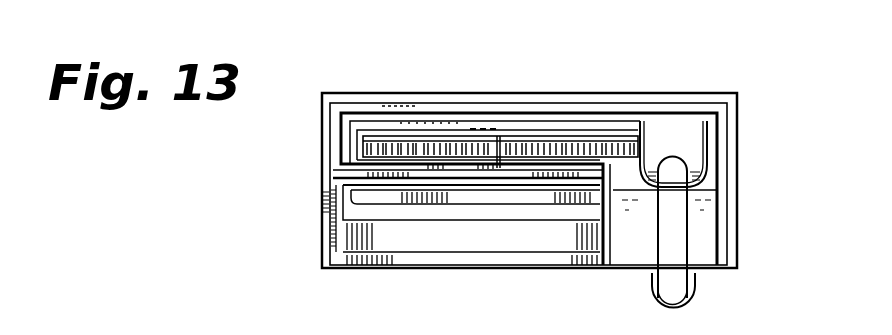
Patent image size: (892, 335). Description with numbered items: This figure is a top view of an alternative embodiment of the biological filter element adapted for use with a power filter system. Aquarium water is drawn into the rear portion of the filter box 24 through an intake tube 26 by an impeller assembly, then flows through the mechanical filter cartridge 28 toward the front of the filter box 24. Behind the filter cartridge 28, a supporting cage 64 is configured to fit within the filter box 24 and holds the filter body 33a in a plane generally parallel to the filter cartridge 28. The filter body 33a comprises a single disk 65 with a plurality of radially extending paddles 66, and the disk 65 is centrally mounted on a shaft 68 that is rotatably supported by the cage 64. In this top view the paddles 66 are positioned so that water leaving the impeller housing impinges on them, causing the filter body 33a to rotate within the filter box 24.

The filter box 24 is at (739, 140).
The intake tube 26 is at (687, 237).
The mechanical filter cartridge 28 is at (370, 197).
The filter body 33a is at (366, 148).
The supporting cage 64 is at (373, 118).
The disk 65 is at (622, 135).
The paddles 66 is at (588, 138).
The shaft 68 is at (484, 133).